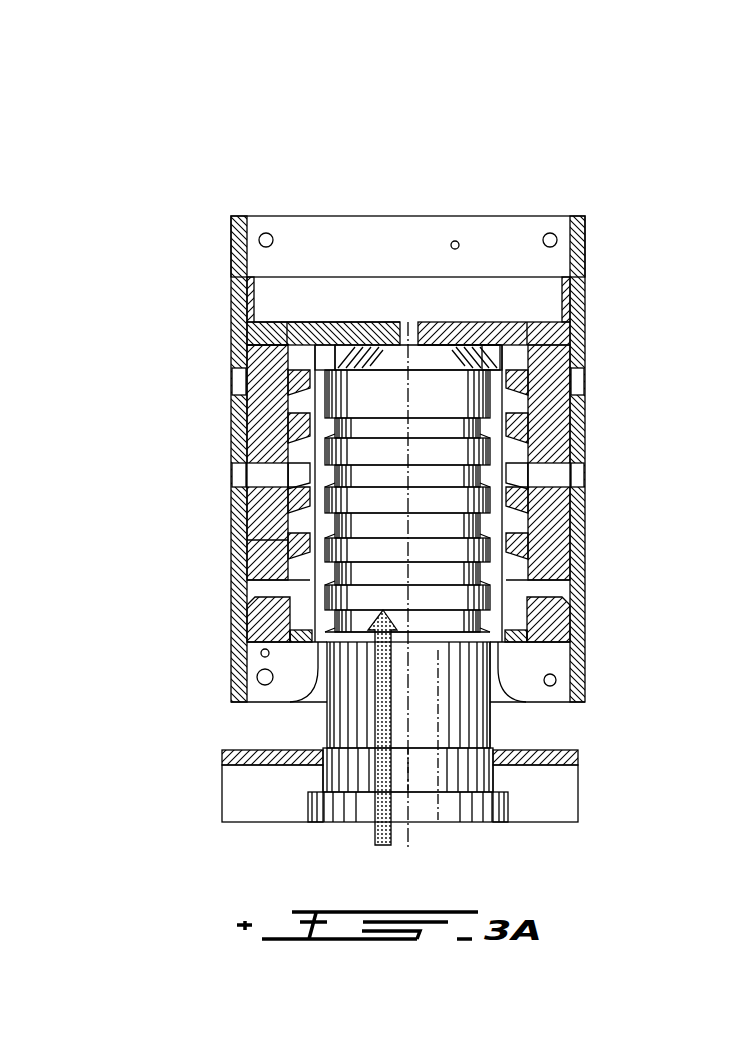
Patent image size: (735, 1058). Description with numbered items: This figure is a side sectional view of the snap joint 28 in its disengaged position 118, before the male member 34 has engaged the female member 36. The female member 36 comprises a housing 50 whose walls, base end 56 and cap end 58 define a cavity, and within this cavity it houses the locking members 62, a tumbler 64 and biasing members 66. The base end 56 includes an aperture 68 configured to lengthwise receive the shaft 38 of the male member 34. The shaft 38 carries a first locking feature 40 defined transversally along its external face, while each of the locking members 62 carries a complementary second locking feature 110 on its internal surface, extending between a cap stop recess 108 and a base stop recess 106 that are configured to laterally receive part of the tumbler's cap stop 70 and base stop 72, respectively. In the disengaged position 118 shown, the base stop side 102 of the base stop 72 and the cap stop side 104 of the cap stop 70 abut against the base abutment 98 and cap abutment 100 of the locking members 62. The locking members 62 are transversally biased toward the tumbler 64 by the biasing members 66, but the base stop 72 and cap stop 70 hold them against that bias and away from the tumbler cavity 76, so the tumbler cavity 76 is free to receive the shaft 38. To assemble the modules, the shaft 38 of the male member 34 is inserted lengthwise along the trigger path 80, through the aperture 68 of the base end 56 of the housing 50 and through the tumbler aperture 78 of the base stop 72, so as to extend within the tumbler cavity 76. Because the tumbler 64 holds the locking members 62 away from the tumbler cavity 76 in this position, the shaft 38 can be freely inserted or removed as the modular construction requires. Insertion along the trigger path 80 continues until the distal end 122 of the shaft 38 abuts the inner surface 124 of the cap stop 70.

The snap joint 28 is at (173, 210).
The disengaged position 118 is at (215, 168).
The male member 34 is at (355, 780).
The female member 36 is at (525, 237).
The shaft 38 is at (430, 760).
The first locking feature 40 is at (330, 575).
The housing 50 is at (231, 252).
The base end 56 is at (532, 682).
The cap end 58 is at (458, 238).
The locking members 62 is at (548, 440).
The tumbler 64 is at (330, 322).
The biasing members 66 is at (573, 532).
The aperture 68 is at (502, 682).
The cap stop 70 is at (567, 352).
The base stop 72 is at (515, 645).
The tumbler cavity 76 is at (385, 397).
The tumbler aperture 78 is at (320, 700).
The trigger path 80 is at (410, 649).
The base abutment 98 is at (258, 663).
The cap abutment 100 is at (245, 350).
The base stop side 102 is at (260, 677).
The cap stop side 104 is at (276, 322).
The base stop recess 106 is at (552, 590).
The cap stop recess 108 is at (537, 298).
The second locking feature 110 is at (243, 550).
The distal end 122 is at (375, 335).
The inner surface 124 is at (450, 345).